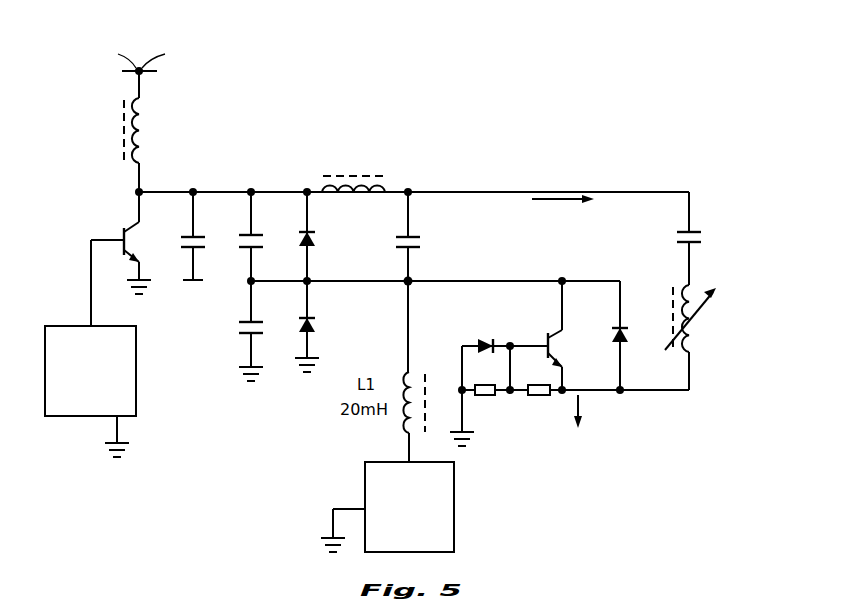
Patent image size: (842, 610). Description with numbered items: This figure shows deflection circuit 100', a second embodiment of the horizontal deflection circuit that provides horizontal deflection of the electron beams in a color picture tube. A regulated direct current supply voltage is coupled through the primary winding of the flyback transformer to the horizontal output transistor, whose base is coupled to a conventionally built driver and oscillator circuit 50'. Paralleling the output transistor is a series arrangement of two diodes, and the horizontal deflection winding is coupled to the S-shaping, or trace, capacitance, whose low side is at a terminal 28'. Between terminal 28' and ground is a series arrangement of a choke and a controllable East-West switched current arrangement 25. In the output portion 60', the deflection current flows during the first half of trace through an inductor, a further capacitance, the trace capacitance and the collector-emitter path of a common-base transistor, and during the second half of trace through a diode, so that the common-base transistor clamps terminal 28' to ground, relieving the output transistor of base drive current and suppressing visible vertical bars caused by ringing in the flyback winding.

The deflection circuit 100' is at (247, 236).
The driver and oscillator circuit 50' is at (90, 391).
The terminal 28' is at (422, 325).
The East-West switched current arrangement 25 is at (454, 513).
The pincushion correction output circuit 60' is at (578, 317).